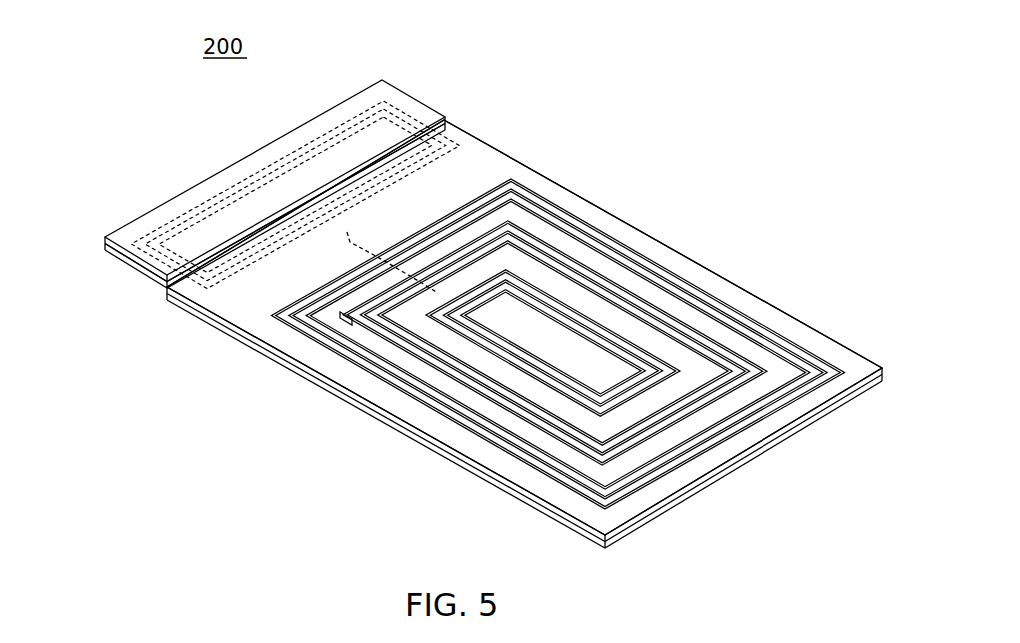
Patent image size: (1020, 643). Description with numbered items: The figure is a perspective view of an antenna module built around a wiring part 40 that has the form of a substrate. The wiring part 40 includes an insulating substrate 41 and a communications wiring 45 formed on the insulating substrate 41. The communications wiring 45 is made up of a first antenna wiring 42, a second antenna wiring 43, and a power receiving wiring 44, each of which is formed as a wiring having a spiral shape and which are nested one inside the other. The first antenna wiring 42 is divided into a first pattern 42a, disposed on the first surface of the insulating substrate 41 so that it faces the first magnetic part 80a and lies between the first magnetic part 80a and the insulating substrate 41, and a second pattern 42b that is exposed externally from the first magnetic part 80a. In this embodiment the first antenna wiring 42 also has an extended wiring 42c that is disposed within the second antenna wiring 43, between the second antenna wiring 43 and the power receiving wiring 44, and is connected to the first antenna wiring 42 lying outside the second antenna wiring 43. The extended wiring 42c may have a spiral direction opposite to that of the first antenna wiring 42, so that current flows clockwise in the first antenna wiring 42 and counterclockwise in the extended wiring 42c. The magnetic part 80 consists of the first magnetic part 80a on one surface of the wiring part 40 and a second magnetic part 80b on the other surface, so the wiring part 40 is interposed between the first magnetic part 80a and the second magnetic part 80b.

The wiring part 40 is at (778, 302).
The insulating substrate 41 is at (828, 348).
The first antenna wiring 42 is at (625, 84).
The first pattern 42a is at (490, 145).
The second pattern 42b is at (442, 103).
The extended wiring 42c is at (548, 253).
The second antenna wiring 43 is at (648, 330).
The power receiving wiring 44 is at (636, 358).
The communications wiring 45 is at (557, 259).
The magnetic part 80 is at (253, 261).
The first magnetic part 80a is at (190, 303).
The second magnetic part 80b is at (118, 258).